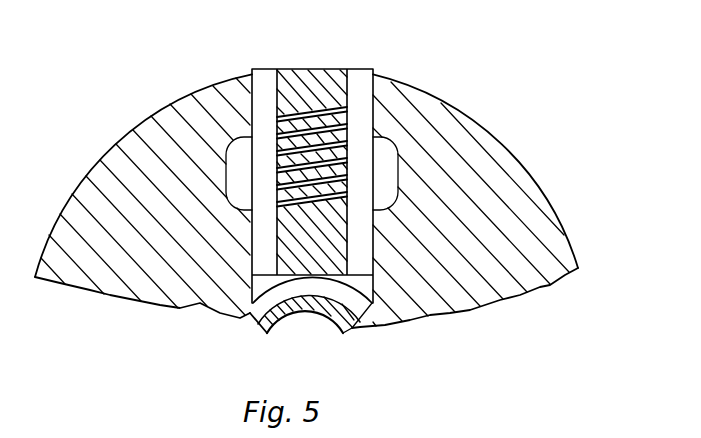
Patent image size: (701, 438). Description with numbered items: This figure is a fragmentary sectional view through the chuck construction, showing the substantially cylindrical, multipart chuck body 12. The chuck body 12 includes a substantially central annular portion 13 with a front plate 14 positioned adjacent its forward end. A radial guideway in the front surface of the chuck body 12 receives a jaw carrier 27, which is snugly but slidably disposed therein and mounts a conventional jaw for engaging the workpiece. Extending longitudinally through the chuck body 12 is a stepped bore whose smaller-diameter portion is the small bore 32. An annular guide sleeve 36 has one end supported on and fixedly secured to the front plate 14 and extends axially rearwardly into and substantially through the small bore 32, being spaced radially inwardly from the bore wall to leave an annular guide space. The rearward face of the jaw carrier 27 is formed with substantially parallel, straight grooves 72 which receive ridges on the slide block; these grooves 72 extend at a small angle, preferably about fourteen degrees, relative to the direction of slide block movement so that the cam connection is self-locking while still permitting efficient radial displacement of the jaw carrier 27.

The chuck body 12 is at (543, 299).
The central annular portion 13 is at (497, 302).
The front plate 14 is at (378, 317).
The jaw carrier 27 is at (290, 68).
The small bore 32 is at (250, 307).
The guide sleeve 36 is at (348, 330).
The grooves 72 is at (332, 157).